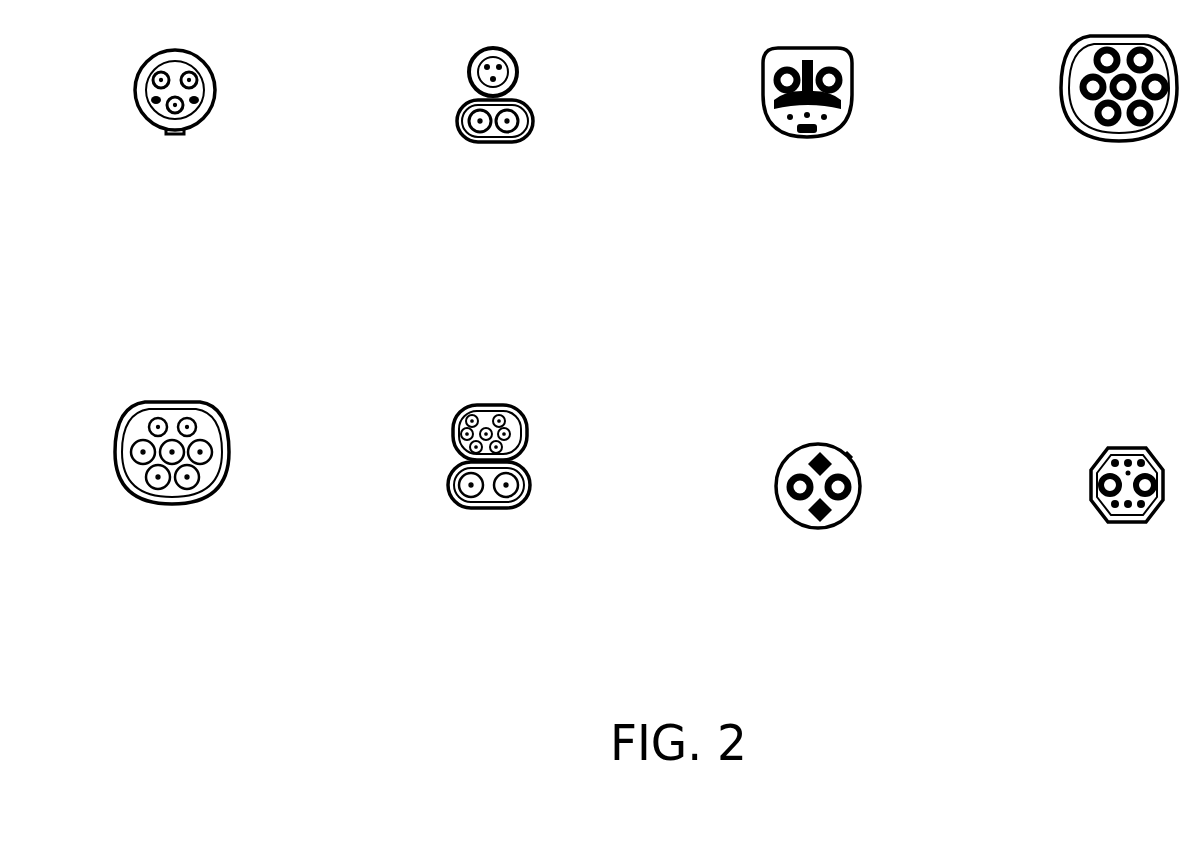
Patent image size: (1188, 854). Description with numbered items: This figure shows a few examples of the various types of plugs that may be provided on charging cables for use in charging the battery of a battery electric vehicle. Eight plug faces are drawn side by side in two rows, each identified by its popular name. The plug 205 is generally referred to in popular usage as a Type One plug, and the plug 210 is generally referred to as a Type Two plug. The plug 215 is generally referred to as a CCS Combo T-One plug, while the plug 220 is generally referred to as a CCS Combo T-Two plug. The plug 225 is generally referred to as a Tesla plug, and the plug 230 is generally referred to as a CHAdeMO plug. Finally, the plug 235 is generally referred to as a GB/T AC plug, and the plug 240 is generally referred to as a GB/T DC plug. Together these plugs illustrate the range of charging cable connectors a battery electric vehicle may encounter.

The plug 205 is at (120, 172).
The plug 210 is at (128, 540).
The plug 215 is at (464, 165).
The plug 220 is at (433, 537).
The plug 225 is at (750, 159).
The plug 230 is at (758, 540).
The plug 235 is at (1066, 152).
The plug 240 is at (1088, 537).